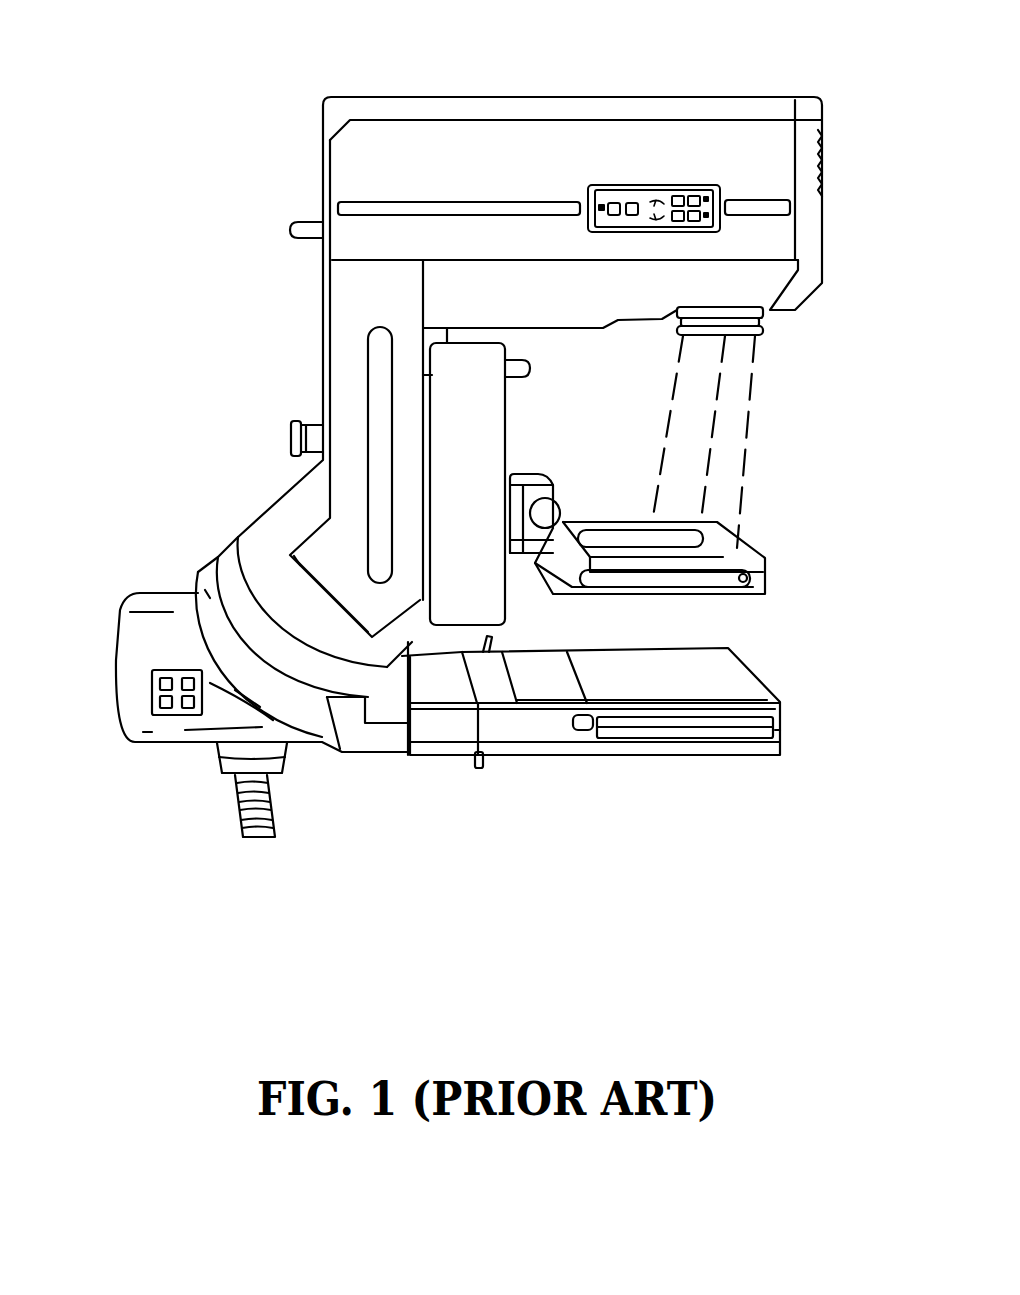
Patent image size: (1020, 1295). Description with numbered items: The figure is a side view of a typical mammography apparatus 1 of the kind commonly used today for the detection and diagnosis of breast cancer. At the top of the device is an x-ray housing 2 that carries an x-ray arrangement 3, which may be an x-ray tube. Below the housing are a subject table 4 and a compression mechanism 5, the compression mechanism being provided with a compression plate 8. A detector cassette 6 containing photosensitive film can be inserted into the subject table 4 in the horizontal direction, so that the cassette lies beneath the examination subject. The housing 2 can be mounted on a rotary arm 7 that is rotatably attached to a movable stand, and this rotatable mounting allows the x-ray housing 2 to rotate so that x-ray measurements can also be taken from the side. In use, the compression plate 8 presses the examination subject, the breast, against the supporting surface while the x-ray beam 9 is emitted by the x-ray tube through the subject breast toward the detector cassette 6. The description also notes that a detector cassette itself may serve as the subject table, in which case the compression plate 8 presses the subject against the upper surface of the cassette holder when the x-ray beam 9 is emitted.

The mammography apparatus 1 is at (339, 494).
The x-ray housing 2 is at (367, 153).
The x-ray arrangement 3 is at (652, 185).
The subject table 4 is at (720, 682).
The compression mechanism 5 is at (478, 398).
The detector cassette 6 is at (683, 722).
The rotary arm 7 is at (217, 587).
The compression plate 8 is at (737, 533).
The x-ray beam 9 is at (712, 428).